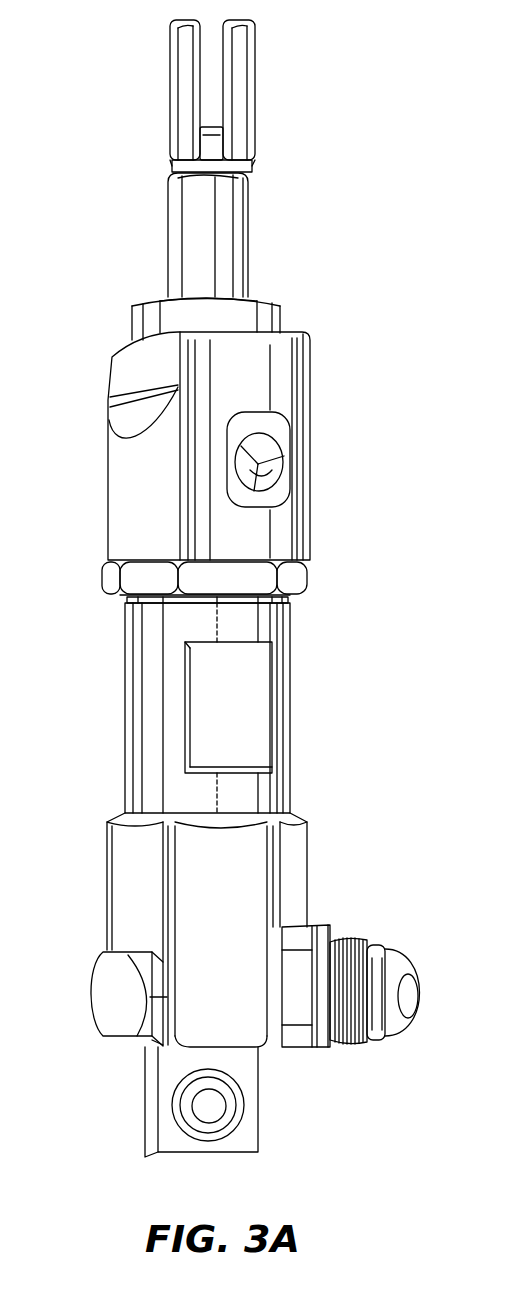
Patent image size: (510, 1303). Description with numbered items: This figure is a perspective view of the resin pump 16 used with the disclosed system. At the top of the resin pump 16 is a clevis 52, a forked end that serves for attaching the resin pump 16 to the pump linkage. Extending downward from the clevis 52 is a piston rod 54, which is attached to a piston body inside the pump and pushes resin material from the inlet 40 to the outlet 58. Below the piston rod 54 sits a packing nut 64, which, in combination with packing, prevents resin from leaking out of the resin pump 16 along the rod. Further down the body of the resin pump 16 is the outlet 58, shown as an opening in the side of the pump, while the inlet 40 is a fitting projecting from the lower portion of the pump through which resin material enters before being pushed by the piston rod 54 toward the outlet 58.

The clevis 52 is at (233, 110).
The piston rod 54 is at (228, 230).
The packing nut 64 is at (247, 310).
The resin pump 16 is at (133, 378).
The outlet 58 is at (274, 462).
The inlet 40 is at (402, 962).